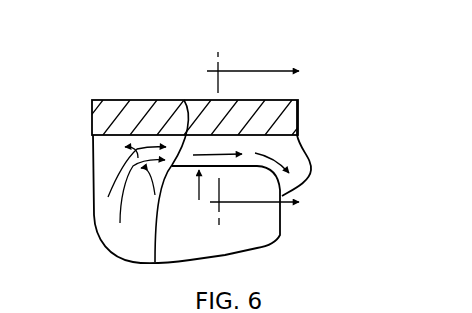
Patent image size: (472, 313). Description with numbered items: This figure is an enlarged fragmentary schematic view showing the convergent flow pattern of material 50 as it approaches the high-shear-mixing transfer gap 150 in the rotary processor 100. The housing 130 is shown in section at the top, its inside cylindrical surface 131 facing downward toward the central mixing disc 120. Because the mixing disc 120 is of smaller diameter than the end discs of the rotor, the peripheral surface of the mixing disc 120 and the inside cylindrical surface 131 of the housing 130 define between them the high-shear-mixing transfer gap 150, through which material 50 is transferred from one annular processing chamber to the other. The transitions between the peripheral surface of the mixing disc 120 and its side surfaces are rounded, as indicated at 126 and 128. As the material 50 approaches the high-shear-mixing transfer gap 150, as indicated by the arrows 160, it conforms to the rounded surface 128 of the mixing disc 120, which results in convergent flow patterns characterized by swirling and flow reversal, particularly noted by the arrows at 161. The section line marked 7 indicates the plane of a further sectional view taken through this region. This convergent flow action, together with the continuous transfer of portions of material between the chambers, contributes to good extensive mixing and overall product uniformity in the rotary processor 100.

The rotary processor 100 is at (153, 71).
The housing 130 is at (125, 97).
The rounded surface 128 is at (198, 131).
The inside cylindrical surface 131 is at (117, 140).
The arrows 160 is at (112, 170).
The arrows 161 is at (133, 190).
The material 50 is at (102, 249).
The central mixing disc 120 is at (237, 232).
The rounded transition 126 is at (283, 192).
The high-shear-mixing transfer gap 150 is at (200, 145).
The section line 7- 7 is at (263, 138).